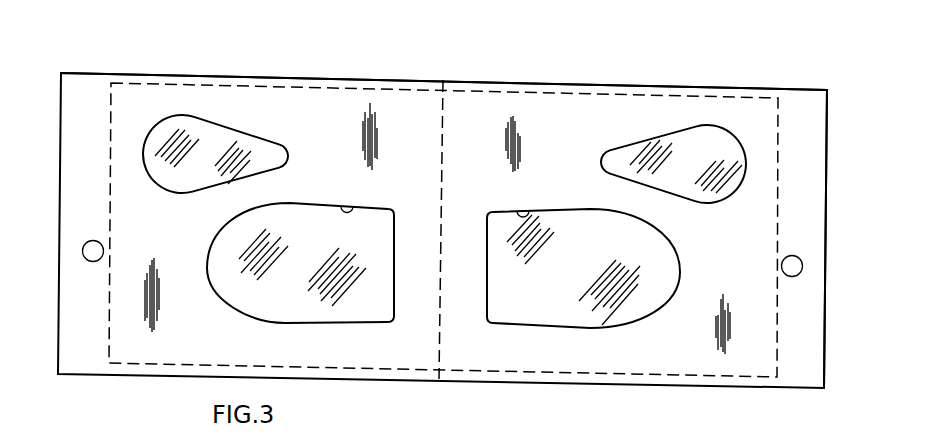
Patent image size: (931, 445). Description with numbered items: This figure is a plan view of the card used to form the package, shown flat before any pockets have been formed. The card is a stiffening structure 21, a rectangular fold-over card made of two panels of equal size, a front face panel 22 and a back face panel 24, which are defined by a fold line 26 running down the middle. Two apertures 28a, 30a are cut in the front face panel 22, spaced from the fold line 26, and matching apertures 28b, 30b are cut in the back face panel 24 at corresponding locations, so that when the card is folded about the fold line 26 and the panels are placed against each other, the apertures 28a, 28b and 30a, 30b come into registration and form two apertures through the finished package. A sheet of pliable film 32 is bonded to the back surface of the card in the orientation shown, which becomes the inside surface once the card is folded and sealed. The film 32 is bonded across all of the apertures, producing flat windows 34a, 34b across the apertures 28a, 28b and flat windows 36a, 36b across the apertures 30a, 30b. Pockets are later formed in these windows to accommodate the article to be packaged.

The stiffening structure 21 is at (551, 73).
The front face panel 22 is at (806, 95).
The back face panel 24 is at (89, 85).
The fold line 26 is at (438, 337).
The aperture 28a is at (525, 211).
The aperture 28b is at (347, 207).
The aperture 30a is at (636, 145).
The aperture 30b is at (250, 133).
The pliable film sheet 32 is at (265, 85).
The window 34a is at (628, 308).
The window 34b is at (257, 297).
The window 36a is at (693, 187).
The window 36b is at (172, 175).